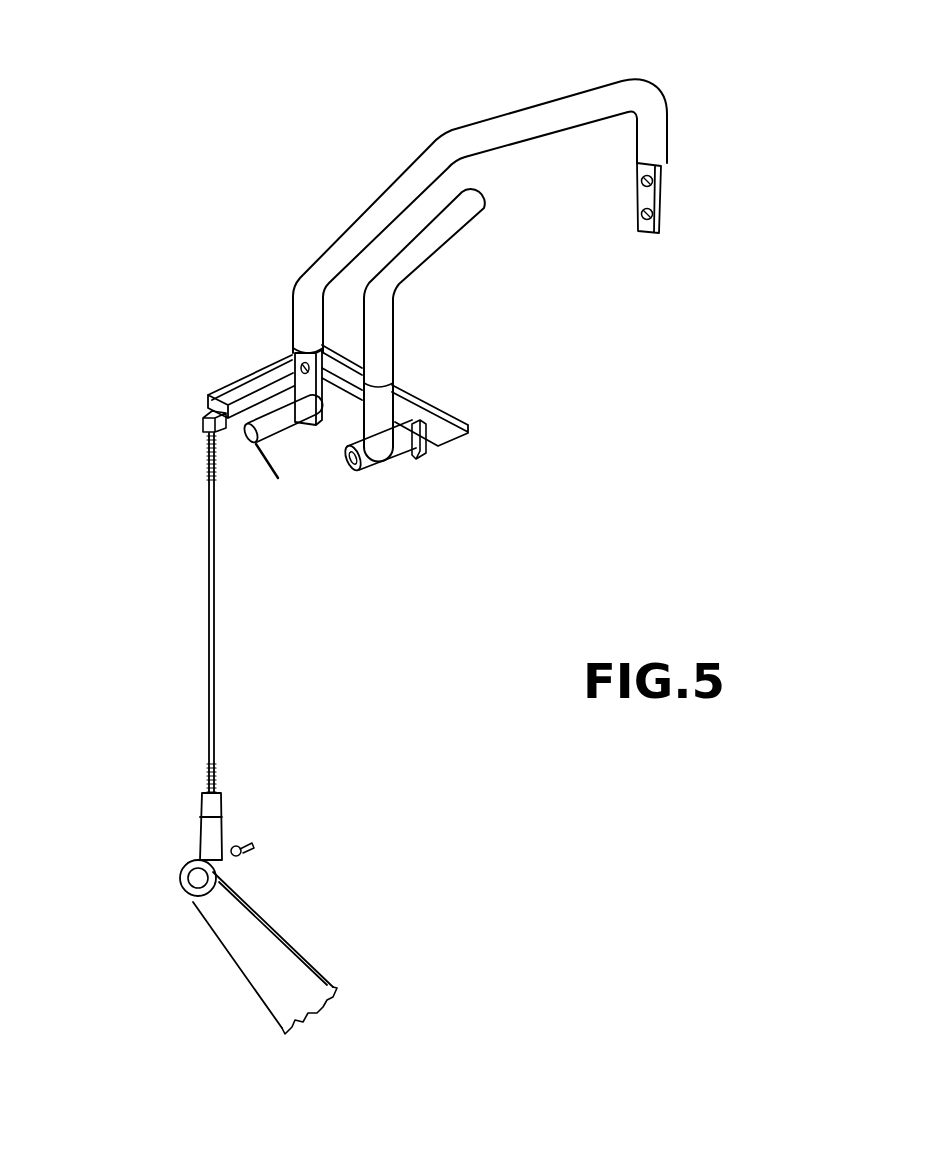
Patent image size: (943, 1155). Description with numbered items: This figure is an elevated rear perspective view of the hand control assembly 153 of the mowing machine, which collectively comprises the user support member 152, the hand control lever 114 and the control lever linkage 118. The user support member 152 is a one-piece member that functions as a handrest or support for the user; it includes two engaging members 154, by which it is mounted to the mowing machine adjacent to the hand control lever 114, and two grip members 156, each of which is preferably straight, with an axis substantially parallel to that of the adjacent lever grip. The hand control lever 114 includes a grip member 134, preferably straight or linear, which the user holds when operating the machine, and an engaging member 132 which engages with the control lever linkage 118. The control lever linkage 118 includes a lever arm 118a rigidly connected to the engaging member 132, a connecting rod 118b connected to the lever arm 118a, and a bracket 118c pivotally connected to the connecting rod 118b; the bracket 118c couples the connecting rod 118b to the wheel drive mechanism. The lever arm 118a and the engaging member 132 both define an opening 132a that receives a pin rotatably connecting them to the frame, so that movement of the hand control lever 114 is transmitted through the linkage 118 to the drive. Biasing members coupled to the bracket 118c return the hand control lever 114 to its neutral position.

The hand control assembly 153 is at (192, 183).
The user support member 152 is at (515, 103).
The grip member 156 is at (589, 90).
The engaging member 154 is at (665, 180).
The grip member 134 is at (455, 237).
The hand control lever 114 is at (433, 275).
The engaging member 132 is at (394, 342).
The opening 132a is at (351, 466).
The control lever linkage 118 is at (185, 587).
The lever arm 118a is at (245, 366).
The connecting rod 118b is at (225, 624).
The bracket 118c is at (325, 950).